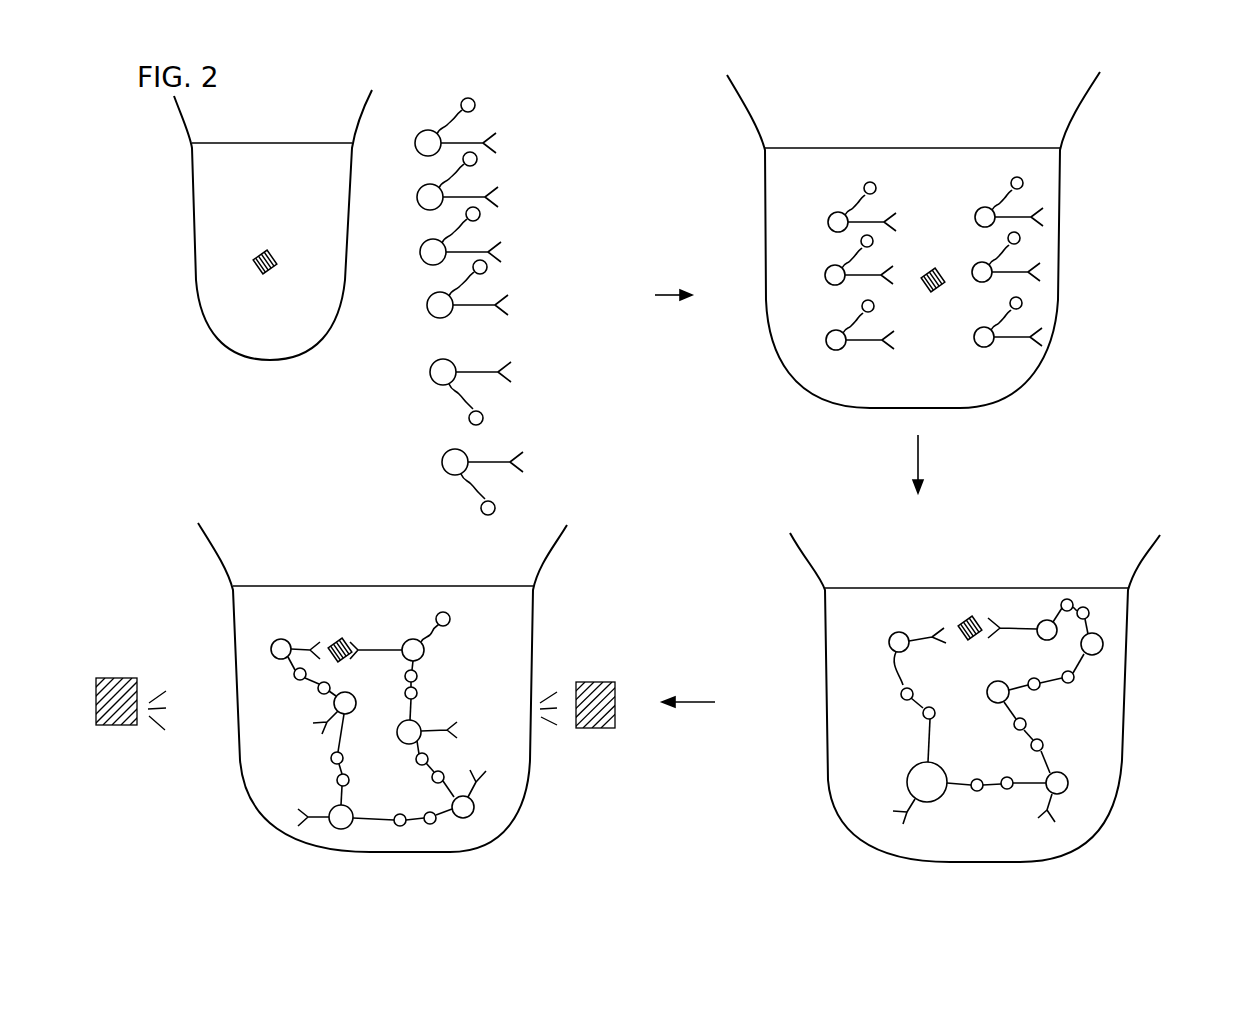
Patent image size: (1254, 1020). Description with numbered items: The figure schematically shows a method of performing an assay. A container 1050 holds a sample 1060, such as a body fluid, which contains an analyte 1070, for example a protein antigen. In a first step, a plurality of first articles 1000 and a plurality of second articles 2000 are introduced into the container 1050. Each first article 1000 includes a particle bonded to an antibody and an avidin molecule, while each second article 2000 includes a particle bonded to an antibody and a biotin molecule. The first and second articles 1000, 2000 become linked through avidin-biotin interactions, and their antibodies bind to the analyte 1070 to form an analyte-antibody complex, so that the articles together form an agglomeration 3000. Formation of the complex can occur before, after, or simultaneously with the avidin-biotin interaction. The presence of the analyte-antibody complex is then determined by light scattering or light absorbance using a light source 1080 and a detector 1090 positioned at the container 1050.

The first article 1000 is at (540, 88).
The second article 2000 is at (540, 278).
The agglomeration 3000 is at (295, 688).
The container 1050 is at (267, 360).
The sample 1060 is at (233, 337).
The analyte 1070 is at (257, 258).
The light source 1080 is at (103, 727).
The detector 1090 is at (585, 730).